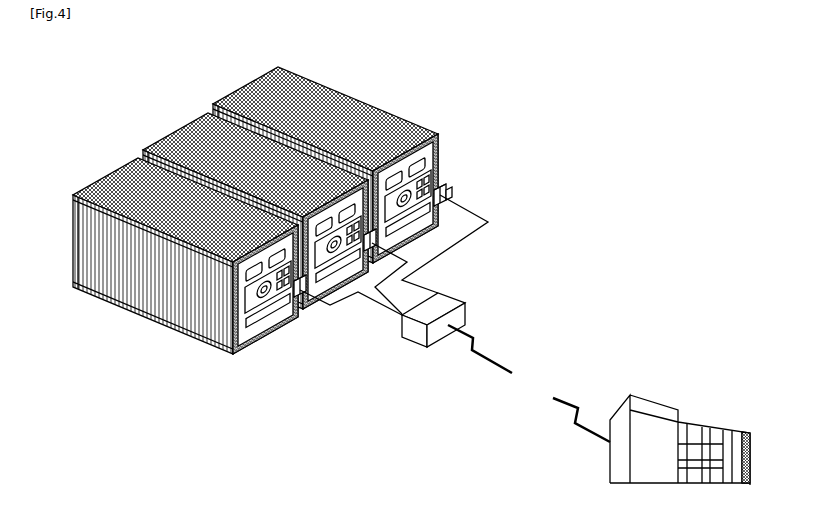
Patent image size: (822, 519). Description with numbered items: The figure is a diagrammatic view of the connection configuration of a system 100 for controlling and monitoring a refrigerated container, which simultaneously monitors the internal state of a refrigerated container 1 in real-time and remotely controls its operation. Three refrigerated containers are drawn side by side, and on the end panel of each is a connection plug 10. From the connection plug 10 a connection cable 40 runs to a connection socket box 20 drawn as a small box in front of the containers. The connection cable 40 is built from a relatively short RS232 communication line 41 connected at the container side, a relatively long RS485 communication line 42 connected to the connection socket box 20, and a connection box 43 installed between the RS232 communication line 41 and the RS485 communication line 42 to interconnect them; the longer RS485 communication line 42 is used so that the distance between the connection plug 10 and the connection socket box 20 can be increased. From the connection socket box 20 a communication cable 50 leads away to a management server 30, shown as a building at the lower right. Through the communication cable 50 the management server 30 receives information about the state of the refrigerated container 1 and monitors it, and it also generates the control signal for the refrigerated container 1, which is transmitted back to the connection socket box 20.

The system for controlling and monitoring a refrigerated container 100 is at (648, 212).
The refrigerated container 1 is at (382, 105).
The connection plug 10 is at (442, 175).
The connection cable 40 is at (508, 193).
The RS232 communication line 41 is at (441, 184).
The connection box 43 is at (452, 198).
The RS485 communication line 42 is at (452, 246).
The connection socket box 20 is at (415, 338).
The communication cable 50 is at (505, 365).
The management server 30 is at (620, 467).